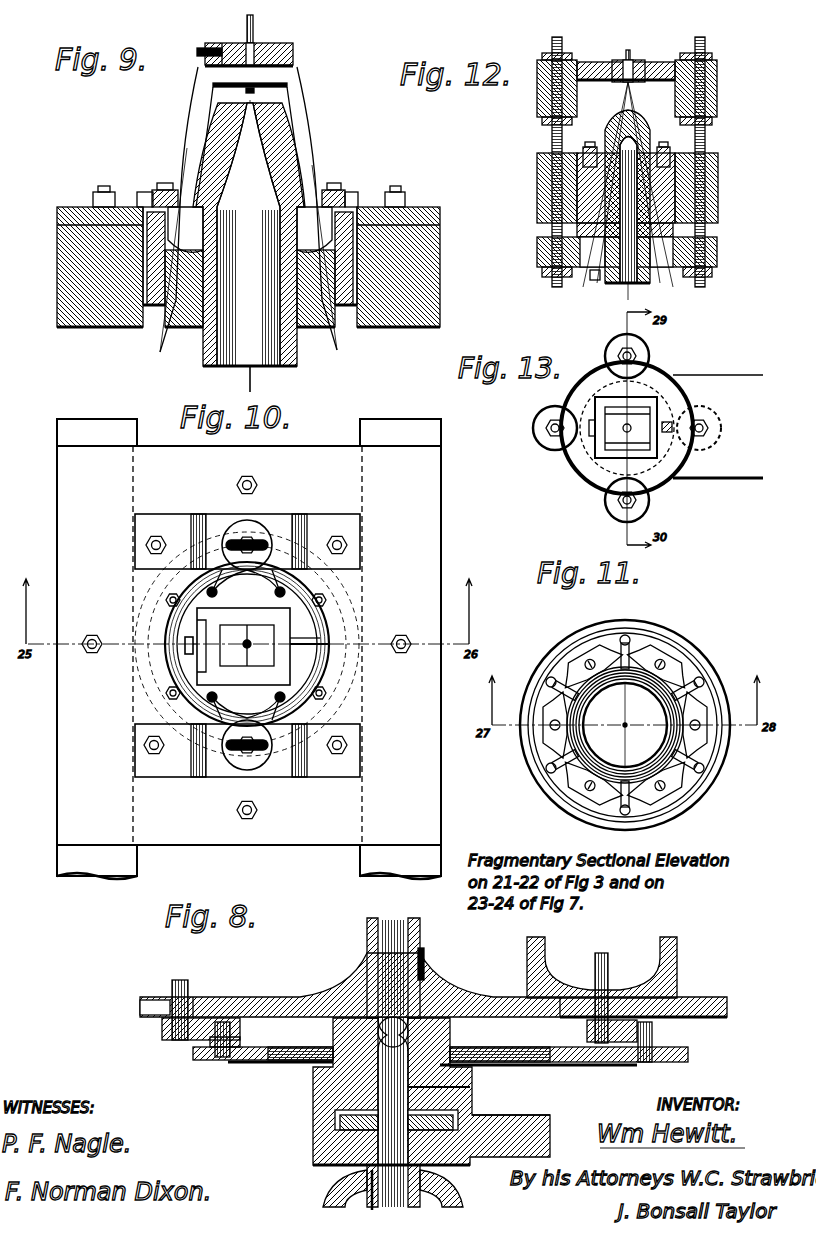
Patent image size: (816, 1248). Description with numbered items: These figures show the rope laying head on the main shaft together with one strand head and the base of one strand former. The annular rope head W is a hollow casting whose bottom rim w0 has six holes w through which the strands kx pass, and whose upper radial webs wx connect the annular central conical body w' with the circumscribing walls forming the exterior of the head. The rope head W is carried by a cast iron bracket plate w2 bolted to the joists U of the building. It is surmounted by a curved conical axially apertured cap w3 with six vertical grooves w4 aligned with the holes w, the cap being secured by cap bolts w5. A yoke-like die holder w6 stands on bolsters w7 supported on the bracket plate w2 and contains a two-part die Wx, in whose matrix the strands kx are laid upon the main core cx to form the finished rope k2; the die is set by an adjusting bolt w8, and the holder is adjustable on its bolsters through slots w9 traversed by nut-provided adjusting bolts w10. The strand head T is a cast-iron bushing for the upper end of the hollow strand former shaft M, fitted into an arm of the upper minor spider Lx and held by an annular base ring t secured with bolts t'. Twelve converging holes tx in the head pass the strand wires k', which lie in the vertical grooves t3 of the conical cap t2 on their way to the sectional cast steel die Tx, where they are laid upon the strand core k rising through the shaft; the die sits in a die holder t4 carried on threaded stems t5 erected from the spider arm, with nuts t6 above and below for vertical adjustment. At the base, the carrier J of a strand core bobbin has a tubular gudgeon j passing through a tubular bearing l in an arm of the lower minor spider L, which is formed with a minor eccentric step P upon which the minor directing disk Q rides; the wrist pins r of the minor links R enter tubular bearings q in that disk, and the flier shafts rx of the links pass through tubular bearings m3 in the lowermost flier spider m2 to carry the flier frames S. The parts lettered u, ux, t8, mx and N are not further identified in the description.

In FIG. 9, the finished rope k2 is at (247, 28).
In FIG. 9, the sectional die Wx is at (252, 56).
In FIG. 10, the sectional die Wx is at (243, 646).
In FIG. 9, the die holder w6 is at (293, 50).
In FIG. 9, the adjusting bolt w8 is at (197, 51).
In FIG. 10, the adjusting bolt w8 is at (185, 648).
In FIG. 9, the bolsters w7 is at (302, 96).
In FIG. 10, the bolsters w7 is at (290, 530).
In FIG. 9, the curved conical cap w3 is at (296, 130).
In FIG. 10, the curved conical cap w3 is at (314, 629).
In FIG. 9, the vertical grooves w4 is at (188, 149).
In FIG. 10, the vertical grooves w4 is at (244, 644).
In FIG. 9, the joists U is at (260, 267).
In FIG. 10, the joists U is at (249, 649).
In FIG. 9, the bracket plate w2 is at (90, 207).
In FIG. 10, the bracket plate w2 is at (246, 647).
In FIG. 9, the cap bolts w5 is at (158, 190).
In FIG. 10, the cap bolts w5 is at (165, 600).
In FIG. 9, the annular rope head W is at (350, 212).
In FIG. 11, the annular rope head W is at (538, 750).
In FIG. 9, the bushing u is at (250, 288).
In FIG. 9, the recess in bushing ux is at (250, 229).
In FIG. 9, the annular central conical body w' is at (257, 277).
In FIG. 11, the annular central conical body w' is at (664, 718).
In FIG. 9, the bottom rim w0 is at (335, 305).
In FIG. 9, the main core cx is at (260, 379).
In FIG. 12, the strand kx is at (621, 47).
In FIG. 11, the strand kx is at (663, 672).
In FIG. 12, the strand head T is at (517, 192).
In FIG. 12, the die holder t4 is at (638, 78).
In FIG. 13, the die holder t4 is at (636, 356).
In FIG. 12, the nuts t6 is at (712, 55).
In FIG. 12, the threaded stems t5 is at (619, 157).
In FIG. 13, the threaded stems t5 is at (616, 500).
In FIG. 12, the upper minor spider Lx is at (639, 188).
In FIG. 13, the upper minor spider Lx is at (555, 393).
In FIG. 12, the annular base ring t is at (614, 260).
In FIG. 13, the annular base ring t is at (620, 432).
In FIG. 12, the bolts t' is at (624, 286).
In FIG. 12, the nozzle tube t8 is at (608, 122).
In FIG. 12, the strand wires k' is at (622, 194).
In FIG. 12, the strand core k is at (635, 291).
In FIG. 12, the vertical grooves t3 is at (588, 143).
In FIG. 13, the vertical grooves t3 is at (672, 425).
In FIG. 12, the curved conical cap t2 is at (665, 147).
In FIG. 12, the converging holes tx is at (594, 277).
In FIG. 13, the sectional cast steel die Tx is at (612, 420).
In FIG. 11, the holes w is at (620, 729).
In FIG. 11, the upper radial webs wx is at (623, 706).
In FIG. 10, the slots w9 is at (255, 535).
In FIG. 10, the adjusting bolts w10 is at (244, 535).
In FIG. 8, the strand former shaft M is at (393, 920).
In FIG. 8, the lowermost flier spider m2 is at (433, 989).
In FIG. 8, the plate end mx is at (137, 1005).
In FIG. 8, the tubular bearings m3 is at (575, 1000).
In FIG. 8, the flier shafts rx is at (172, 985).
In FIG. 8, the minor links R is at (162, 1030).
In FIG. 8, the tubular bearings q is at (444, 1040).
In FIG. 8, the minor eccentric step P is at (263, 1068).
In FIG. 8, the minor directing disk Q is at (205, 1075).
In FIG. 8, the wrist pins r is at (643, 1072).
In FIG. 8, the tubular bearing l is at (419, 1091).
In FIG. 8, the lower minor spider L is at (521, 1126).
In FIG. 8, the carrier J is at (394, 1186).
In FIG. 8, the tubular gudgeon j is at (383, 1188).
In FIG. 8, the flier frames S is at (608, 967).
In FIG. 8, the plate N is at (643, 998).